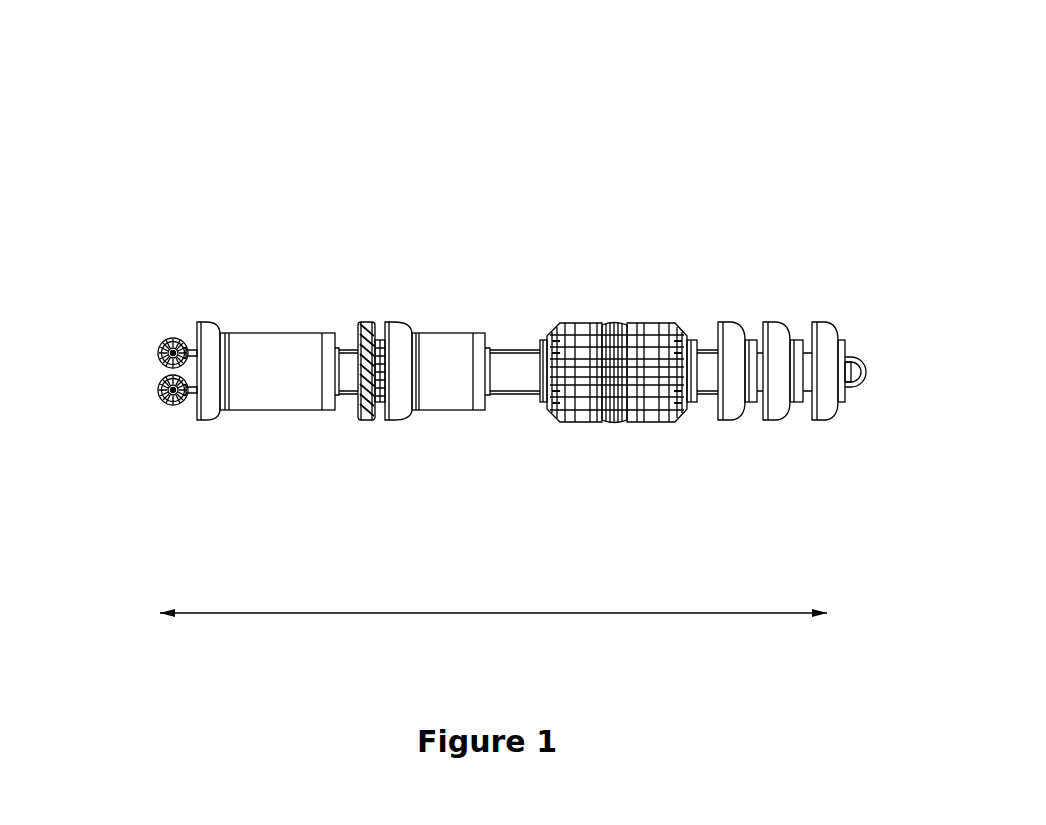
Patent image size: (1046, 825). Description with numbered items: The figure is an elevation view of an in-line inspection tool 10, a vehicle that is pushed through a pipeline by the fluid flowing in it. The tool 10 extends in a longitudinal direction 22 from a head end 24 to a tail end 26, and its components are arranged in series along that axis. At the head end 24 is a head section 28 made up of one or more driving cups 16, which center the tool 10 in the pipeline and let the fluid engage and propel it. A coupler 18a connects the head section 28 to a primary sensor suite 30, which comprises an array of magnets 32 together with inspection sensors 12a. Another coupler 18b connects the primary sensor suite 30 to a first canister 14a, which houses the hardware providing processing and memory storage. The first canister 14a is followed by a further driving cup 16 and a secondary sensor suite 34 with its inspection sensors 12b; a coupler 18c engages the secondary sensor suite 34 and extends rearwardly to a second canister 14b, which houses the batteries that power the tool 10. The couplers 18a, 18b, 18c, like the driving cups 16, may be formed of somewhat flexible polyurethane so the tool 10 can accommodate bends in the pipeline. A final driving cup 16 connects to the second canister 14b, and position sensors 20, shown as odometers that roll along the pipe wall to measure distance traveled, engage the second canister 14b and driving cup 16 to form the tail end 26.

The in-line inspection tool 10 is at (416, 90).
The inspection sensors 12a is at (624, 434).
The inspection sensors 12b is at (360, 430).
The first canister 14a is at (407, 305).
The second canister 14b is at (325, 305).
The driving cups 16 is at (203, 424).
The coupler 18a is at (695, 305).
The coupler 18b is at (492, 305).
The coupler 18c is at (355, 305).
The position sensors 20 is at (150, 399).
The longitudinal direction 22 is at (440, 613).
The head end 24 is at (892, 322).
The tail end 26 is at (127, 329).
The head section 28 is at (723, 305).
The primary sensor suite 30 is at (558, 305).
The array of magnets 32 is at (587, 418).
The secondary sensor suite 34 is at (358, 305).